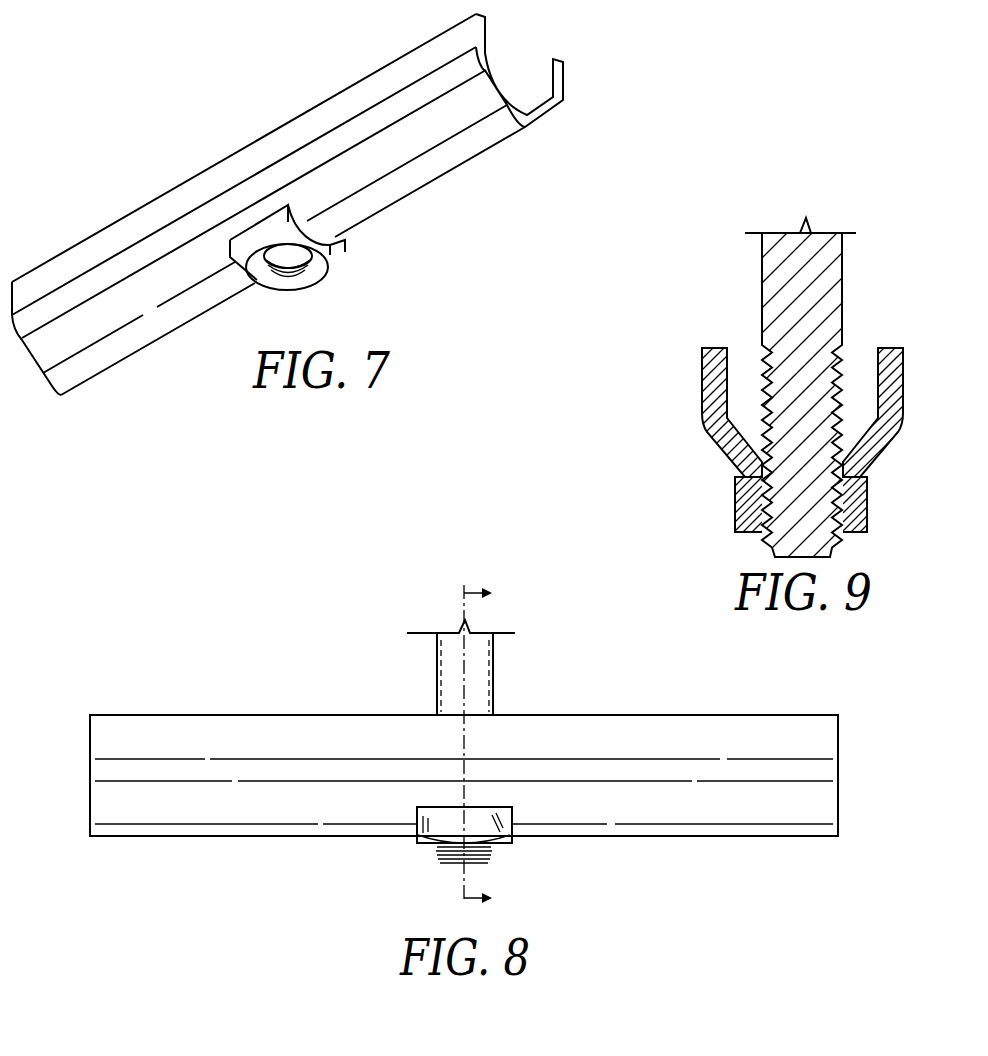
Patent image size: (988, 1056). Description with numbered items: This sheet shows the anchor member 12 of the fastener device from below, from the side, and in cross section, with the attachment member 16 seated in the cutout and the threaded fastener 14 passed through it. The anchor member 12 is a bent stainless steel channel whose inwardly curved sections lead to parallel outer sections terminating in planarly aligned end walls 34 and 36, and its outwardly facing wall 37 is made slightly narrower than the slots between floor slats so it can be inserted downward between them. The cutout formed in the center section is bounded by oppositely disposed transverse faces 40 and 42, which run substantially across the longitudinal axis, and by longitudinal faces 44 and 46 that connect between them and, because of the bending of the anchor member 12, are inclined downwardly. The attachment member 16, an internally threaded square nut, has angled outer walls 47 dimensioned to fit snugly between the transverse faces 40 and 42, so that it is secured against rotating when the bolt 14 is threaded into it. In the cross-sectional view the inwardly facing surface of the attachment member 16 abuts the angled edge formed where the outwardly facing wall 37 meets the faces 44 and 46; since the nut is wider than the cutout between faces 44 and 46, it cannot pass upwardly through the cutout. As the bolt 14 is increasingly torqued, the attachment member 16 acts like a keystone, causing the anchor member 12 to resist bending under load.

In FIG. 7, the anchor member 12 is at (102, 248).
In FIG. 9, the anchor member 12 is at (774, 410).
In FIG. 8, the anchor member 12 is at (648, 845).
In FIG. 9, the threaded fastener 14 is at (833, 261).
In FIG. 8, the threaded fastener 14 is at (440, 677).
In FIG. 7, the attachment member 16 is at (322, 264).
In FIG. 9, the attachment member 16 is at (745, 518).
In FIG. 8, the attachment member 16 is at (434, 829).
In FIG. 9, the end wall 34 is at (718, 348).
In FIG. 9, the end wall 36 is at (896, 348).
In FIG. 9, the outwardly facing wall 37 is at (702, 426).
In FIG. 8, the transverse face 40 is at (417, 815).
In FIG. 7, the transverse face 42 is at (310, 240).
In FIG. 8, the transverse face 42 is at (513, 814).
In FIG. 9, the longitudinal face 44 is at (748, 487).
In FIG. 9, the longitudinal face 46 is at (860, 485).
In FIG. 7, the outer walls 47 is at (350, 249).